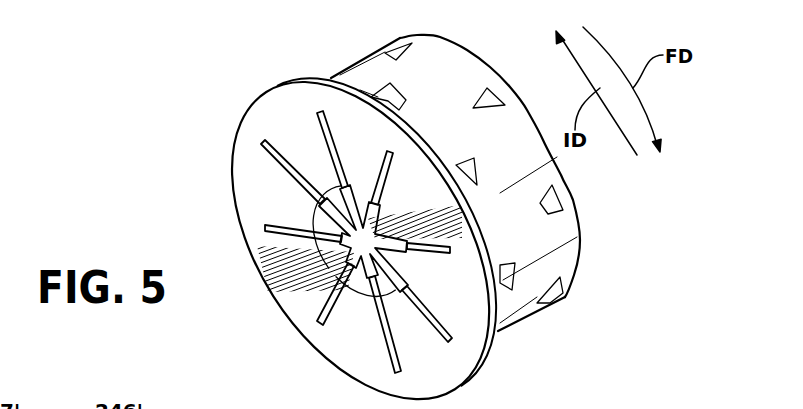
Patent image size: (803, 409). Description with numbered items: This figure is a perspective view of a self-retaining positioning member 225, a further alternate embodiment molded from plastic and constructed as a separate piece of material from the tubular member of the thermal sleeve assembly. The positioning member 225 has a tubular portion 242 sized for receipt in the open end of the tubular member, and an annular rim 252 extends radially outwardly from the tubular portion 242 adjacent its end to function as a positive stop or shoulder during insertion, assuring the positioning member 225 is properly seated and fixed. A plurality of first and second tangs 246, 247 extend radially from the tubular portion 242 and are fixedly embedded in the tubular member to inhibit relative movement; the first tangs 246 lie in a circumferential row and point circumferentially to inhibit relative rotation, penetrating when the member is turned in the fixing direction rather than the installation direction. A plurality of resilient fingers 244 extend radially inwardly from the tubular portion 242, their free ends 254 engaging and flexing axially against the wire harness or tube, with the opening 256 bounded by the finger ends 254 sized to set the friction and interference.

The positioning member 225 is at (242, 94).
The annular rim 252 is at (312, 79).
The tubular portion 242 is at (577, 302).
The first tangs 246 is at (397, 92).
The second tangs 247 is at (397, 44).
The fingers 244 is at (284, 215).
The free ends of the fingers 254 is at (336, 238).
The opening 256 is at (325, 211).